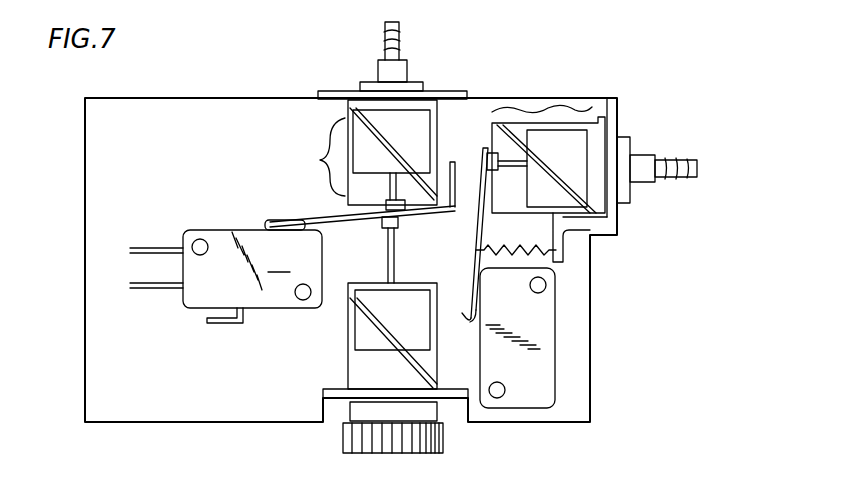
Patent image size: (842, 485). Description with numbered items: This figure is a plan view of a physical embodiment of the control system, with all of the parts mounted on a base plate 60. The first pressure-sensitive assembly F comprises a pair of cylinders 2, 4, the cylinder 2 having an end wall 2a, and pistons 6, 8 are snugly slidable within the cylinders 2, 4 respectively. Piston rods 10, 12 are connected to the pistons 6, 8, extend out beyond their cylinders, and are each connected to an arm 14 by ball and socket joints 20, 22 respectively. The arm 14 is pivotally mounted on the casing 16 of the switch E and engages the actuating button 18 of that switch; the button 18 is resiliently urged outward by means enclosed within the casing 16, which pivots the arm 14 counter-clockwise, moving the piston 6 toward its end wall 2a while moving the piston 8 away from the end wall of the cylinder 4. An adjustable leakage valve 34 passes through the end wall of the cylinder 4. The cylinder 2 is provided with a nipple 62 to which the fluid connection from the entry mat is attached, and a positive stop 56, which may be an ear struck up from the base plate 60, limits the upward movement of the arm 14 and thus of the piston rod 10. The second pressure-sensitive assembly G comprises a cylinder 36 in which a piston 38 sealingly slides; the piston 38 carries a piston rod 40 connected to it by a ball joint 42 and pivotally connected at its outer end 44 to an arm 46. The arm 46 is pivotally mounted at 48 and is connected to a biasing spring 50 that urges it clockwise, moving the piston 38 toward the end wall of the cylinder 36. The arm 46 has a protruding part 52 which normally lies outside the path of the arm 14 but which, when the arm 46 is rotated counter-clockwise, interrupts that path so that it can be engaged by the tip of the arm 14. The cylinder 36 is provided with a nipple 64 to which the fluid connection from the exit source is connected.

The cylinder 2 is at (347, 110).
The end wall 2a is at (435, 91).
The cylinder 4 is at (348, 370).
The piston 6 is at (367, 118).
The piston 8 is at (427, 342).
The piston rod 10 is at (398, 190).
The piston rod 12 is at (388, 266).
The arm 14 is at (418, 215).
The casing 16 is at (277, 297).
The actuating button 18 is at (288, 222).
The ball and socket joint 20 is at (387, 222).
The ball and socket joint 22 is at (396, 228).
The adjustable leakage valve 34 is at (387, 447).
The cylinder 36 is at (560, 218).
The piston 38 is at (583, 137).
The piston rod 40 is at (513, 167).
The ball joint 42 is at (352, 390).
The outer end 44 is at (493, 150).
The arm 46 is at (492, 236).
The pivot 48 is at (472, 320).
The biasing spring 50 is at (522, 256).
The protruding part 52 is at (470, 252).
The positive stop 56 is at (466, 181).
The base plate 60 is at (577, 318).
The nipple 62 is at (405, 38).
The nipple 64 is at (690, 175).
The switch E is at (279, 262).
The first pressure-sensitive assembly F is at (312, 157).
The second pressure-sensitive assembly G is at (542, 95).